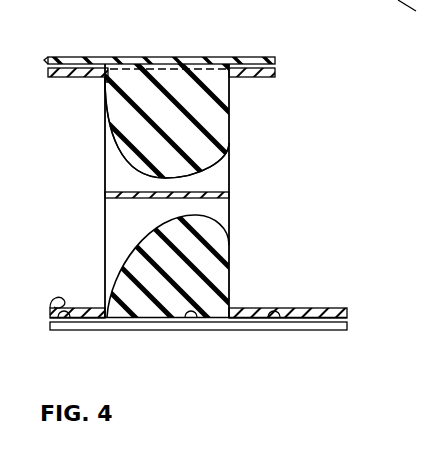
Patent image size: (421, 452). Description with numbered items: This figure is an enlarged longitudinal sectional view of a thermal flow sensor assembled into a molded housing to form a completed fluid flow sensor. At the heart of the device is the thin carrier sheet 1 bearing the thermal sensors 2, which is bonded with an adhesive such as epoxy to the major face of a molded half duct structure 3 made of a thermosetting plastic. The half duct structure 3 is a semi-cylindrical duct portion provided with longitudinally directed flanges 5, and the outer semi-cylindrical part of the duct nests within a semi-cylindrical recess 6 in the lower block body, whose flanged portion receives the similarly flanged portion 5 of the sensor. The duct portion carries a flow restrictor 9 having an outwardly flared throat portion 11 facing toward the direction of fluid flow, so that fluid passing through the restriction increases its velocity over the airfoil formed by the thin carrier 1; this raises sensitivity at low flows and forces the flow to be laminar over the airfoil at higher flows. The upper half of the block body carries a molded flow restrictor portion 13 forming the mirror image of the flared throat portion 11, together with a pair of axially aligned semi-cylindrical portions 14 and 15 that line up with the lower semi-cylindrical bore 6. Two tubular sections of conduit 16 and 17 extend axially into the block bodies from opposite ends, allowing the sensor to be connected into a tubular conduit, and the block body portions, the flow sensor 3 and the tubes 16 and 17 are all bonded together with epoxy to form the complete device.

The carrier sheet 1 is at (209, 199).
The thermal sensors 2 is at (215, 186).
The half duct structure 3 is at (246, 277).
The longitudinally directed flanges 5 is at (80, 25).
The semi-cylindrical recess 6 is at (65, 322).
The flow restrictor 9 is at (207, 273).
The outwardly flared throat portion 11 is at (130, 218).
The molded flow restrictor portion 13 is at (125, 123).
The semi-cylindrical portion 14 is at (60, 57).
The semi-cylindrical portion 15 is at (200, 60).
The tubular section of conduit 16 is at (86, 76).
The tubular section of conduit 17 is at (246, 78).